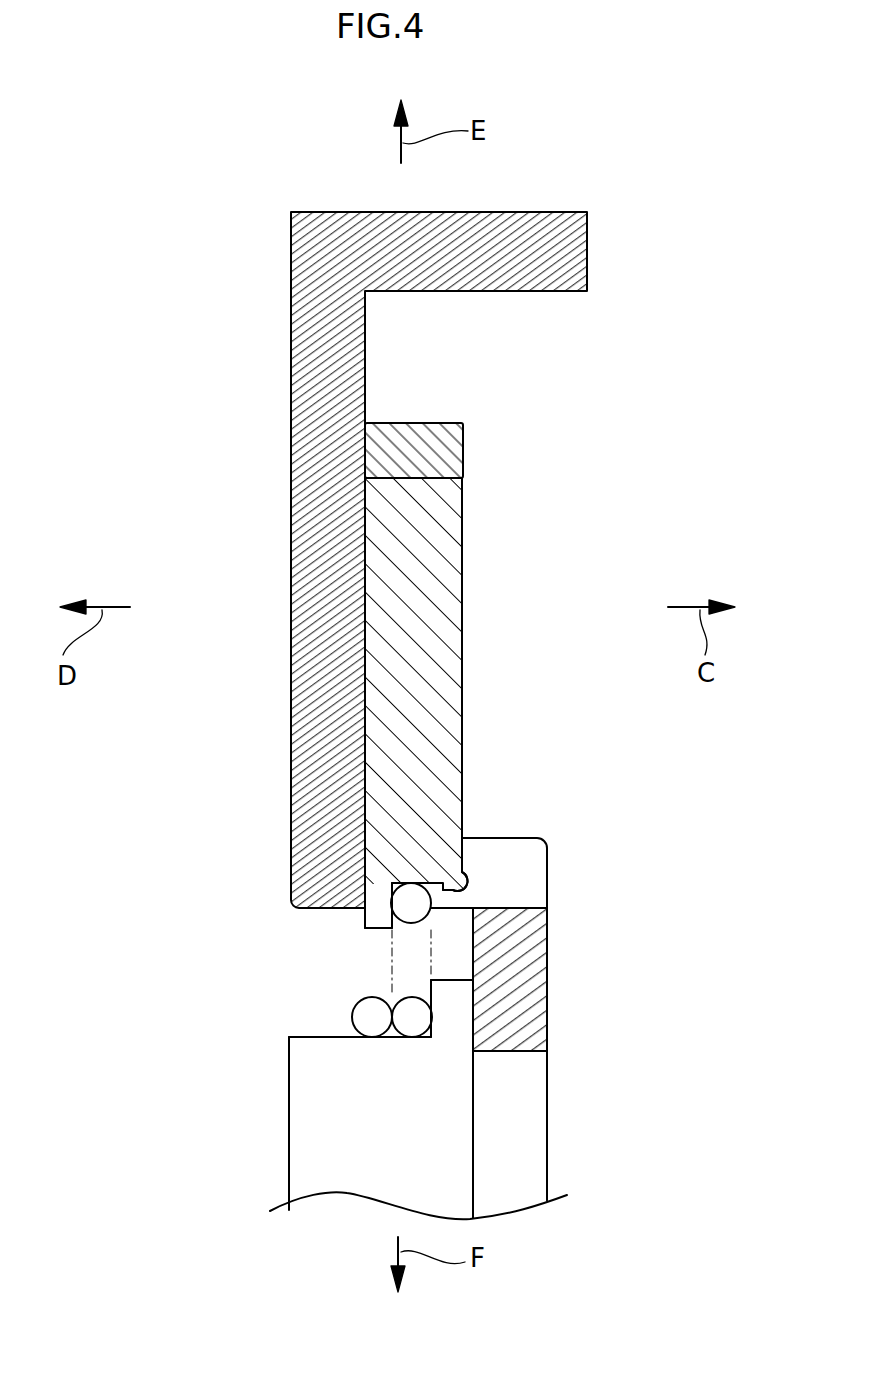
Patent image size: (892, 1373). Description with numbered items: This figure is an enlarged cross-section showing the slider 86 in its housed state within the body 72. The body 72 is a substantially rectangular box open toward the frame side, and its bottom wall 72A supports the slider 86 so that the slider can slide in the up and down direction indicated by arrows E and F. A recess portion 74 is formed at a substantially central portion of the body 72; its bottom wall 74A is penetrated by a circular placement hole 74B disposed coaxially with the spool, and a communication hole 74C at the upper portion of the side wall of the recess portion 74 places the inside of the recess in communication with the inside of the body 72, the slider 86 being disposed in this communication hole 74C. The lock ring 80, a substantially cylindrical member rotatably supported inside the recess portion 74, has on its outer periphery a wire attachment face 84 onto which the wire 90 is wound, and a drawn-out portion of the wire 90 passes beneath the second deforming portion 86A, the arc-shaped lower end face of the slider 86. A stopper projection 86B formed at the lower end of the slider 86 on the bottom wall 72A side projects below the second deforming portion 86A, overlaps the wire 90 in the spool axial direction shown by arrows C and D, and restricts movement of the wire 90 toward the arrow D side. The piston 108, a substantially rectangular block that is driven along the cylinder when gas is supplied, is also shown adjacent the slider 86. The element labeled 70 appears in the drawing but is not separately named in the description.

The upper member 70 is at (530, 212).
The body 72 is at (324, 212).
The bottom wall 72A is at (291, 266).
The piston 108 is at (428, 422).
The slider 86 is at (465, 533).
The second deforming portion 86A is at (473, 880).
The stopper projection 86B is at (360, 918).
The recess portion 74 is at (313, 910).
The bottom wall 74A is at (548, 990).
The placement hole 74B is at (517, 1052).
The communication hole 74C is at (455, 898).
The lock ring 80 is at (289, 1135).
The wire attachment face 84 is at (313, 1037).
The wire 90 is at (350, 1014).